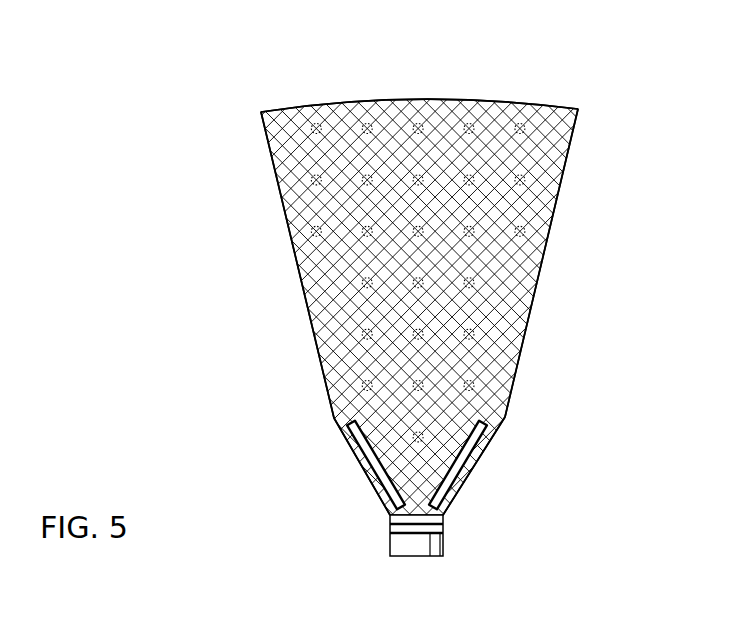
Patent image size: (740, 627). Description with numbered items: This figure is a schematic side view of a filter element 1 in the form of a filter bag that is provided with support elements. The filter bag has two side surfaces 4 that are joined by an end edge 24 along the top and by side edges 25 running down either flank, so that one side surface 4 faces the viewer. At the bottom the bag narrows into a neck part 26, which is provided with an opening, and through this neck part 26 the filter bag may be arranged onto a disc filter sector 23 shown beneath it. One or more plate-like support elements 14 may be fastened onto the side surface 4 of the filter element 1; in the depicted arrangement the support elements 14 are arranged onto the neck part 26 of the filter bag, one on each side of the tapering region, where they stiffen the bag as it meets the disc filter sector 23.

The filter element 1 is at (162, 307).
The side surface 4 is at (497, 338).
The plate-like support element 14 is at (370, 452).
The disc filter sector 23 is at (443, 540).
The end edge 24 is at (325, 100).
The side edge 25 is at (282, 207).
The neck part 26 is at (334, 494).